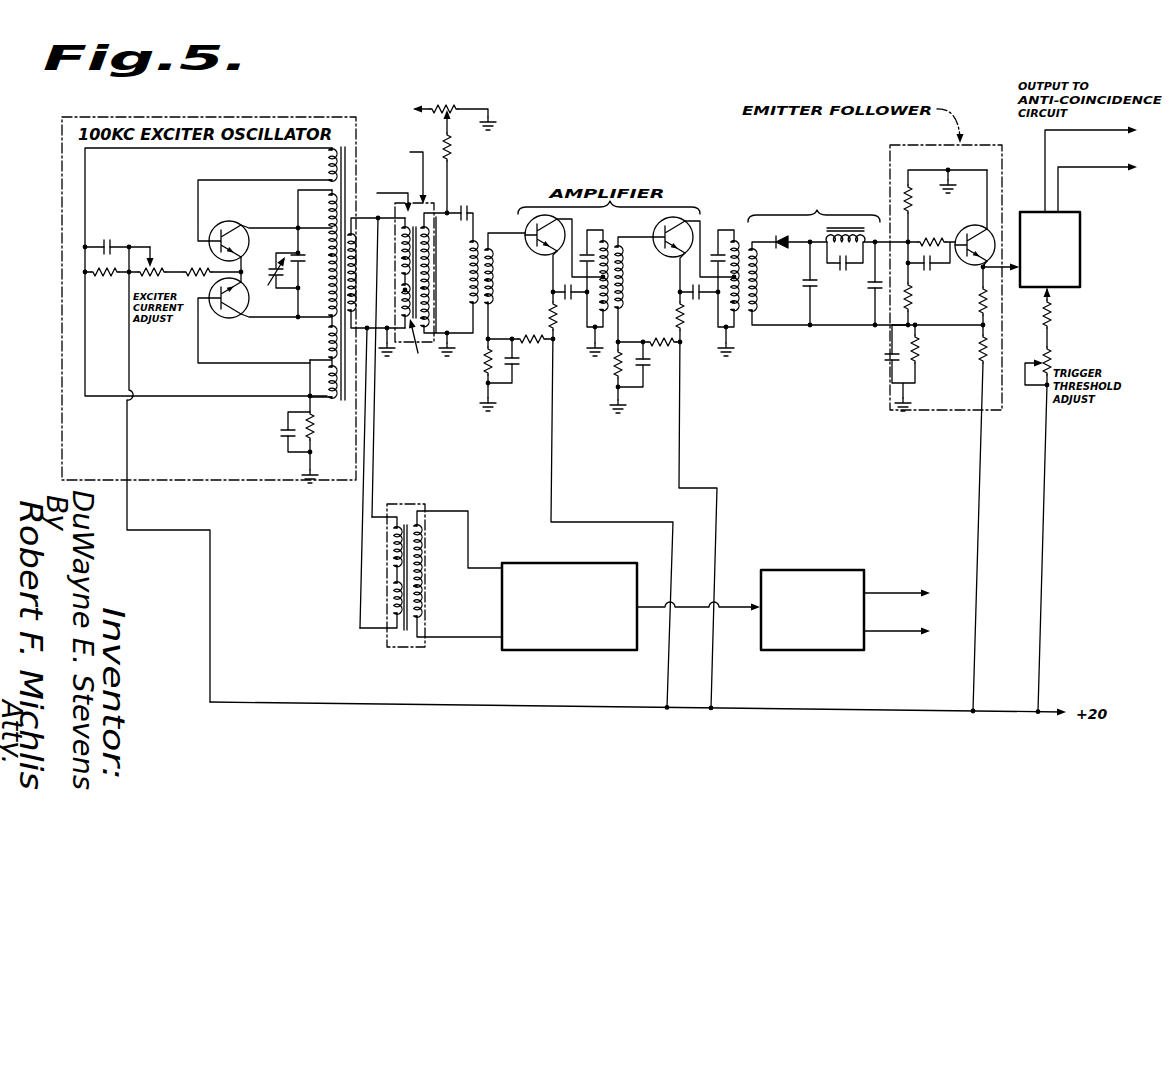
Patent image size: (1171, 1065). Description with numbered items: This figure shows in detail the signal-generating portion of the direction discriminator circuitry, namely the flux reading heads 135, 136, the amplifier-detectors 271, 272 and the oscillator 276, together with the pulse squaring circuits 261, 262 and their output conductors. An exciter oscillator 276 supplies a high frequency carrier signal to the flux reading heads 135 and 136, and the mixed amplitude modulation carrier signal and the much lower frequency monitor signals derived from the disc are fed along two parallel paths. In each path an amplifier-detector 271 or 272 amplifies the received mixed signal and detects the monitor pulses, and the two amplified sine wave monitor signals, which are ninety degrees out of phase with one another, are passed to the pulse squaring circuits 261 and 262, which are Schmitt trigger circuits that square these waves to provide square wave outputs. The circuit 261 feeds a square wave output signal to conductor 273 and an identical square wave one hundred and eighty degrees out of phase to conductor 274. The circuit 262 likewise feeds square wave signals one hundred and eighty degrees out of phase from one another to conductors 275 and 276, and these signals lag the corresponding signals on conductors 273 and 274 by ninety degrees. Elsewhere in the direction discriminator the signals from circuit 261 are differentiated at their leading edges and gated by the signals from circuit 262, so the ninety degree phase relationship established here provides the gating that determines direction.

The flux reading head 135 is at (440, 199).
The flux reading head 136 is at (394, 648).
The pulse squaring circuit 261 is at (1075, 293).
The pulse squaring circuit 262 is at (842, 652).
The amplifier-detector 271 is at (733, 197).
The amplifier-detector 272 is at (598, 652).
The conductor 273 is at (1045, 143).
The conductor 274 is at (1058, 196).
The conductor 275 is at (893, 592).
The conductor 276 is at (240, 488).